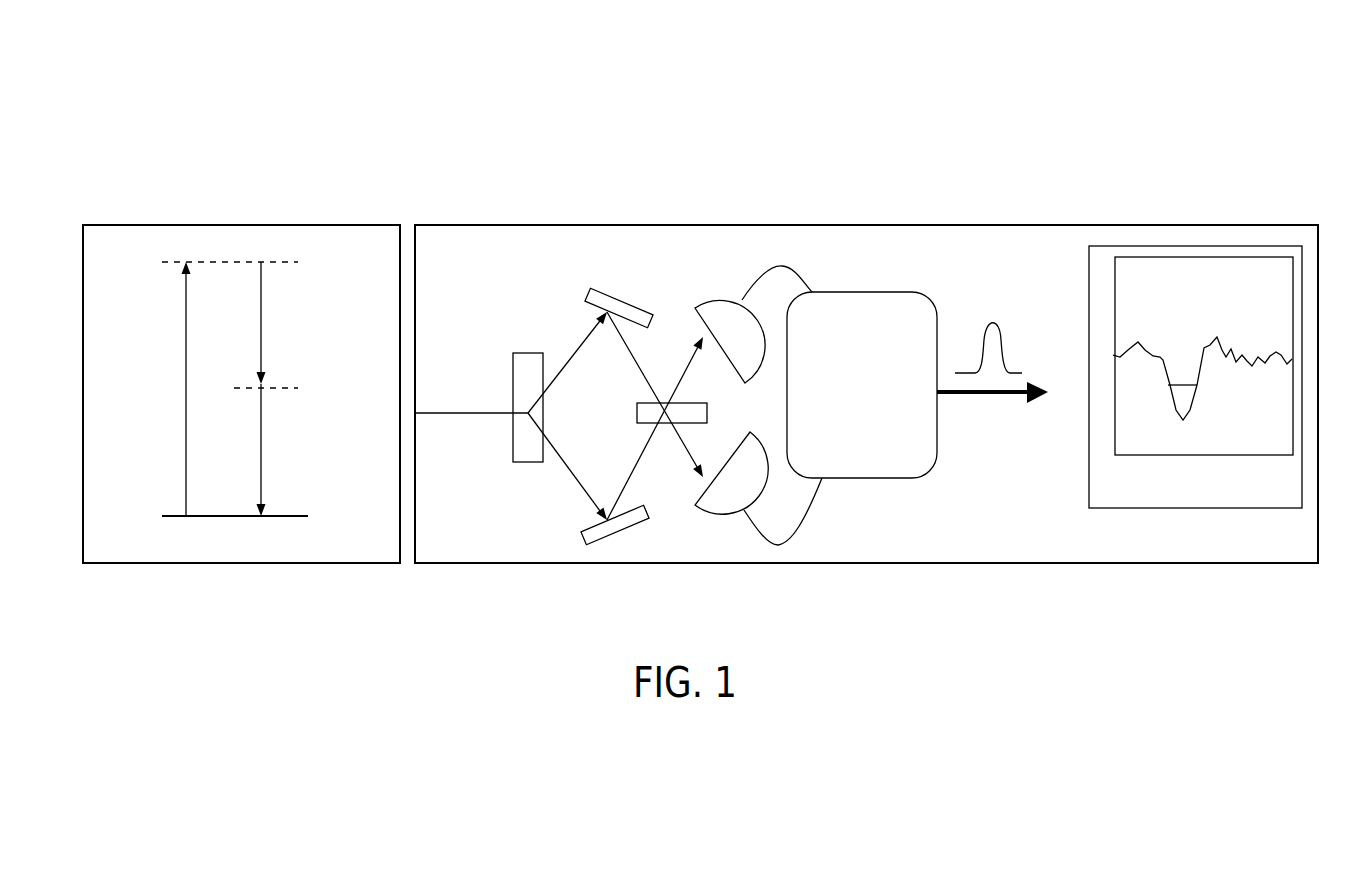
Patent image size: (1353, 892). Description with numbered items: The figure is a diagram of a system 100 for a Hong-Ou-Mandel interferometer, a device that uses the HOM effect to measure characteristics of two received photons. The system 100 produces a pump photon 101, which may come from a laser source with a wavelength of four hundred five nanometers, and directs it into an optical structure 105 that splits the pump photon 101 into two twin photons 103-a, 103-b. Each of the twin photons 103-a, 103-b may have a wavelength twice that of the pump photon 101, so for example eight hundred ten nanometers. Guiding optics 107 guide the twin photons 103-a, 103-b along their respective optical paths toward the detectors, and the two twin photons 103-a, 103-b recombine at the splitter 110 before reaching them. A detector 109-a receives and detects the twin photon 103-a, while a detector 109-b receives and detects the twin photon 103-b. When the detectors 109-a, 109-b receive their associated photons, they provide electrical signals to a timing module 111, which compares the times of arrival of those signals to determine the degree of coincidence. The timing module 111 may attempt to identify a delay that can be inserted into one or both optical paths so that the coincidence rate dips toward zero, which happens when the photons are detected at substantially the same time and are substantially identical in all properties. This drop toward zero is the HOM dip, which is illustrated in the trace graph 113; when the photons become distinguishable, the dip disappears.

The system 100 is at (250, 110).
The pump photon 101 is at (186, 401).
The twin photon 103-a is at (261, 328).
The twin photon 103-b is at (261, 460).
The optical structure 105 is at (513, 450).
The guiding optics 107 is at (600, 290).
The detector 109-a is at (718, 512).
The detector 109-b is at (715, 295).
The splitter 110 is at (637, 413).
The timing module 111 is at (862, 292).
The trace graph 113 is at (1089, 490).